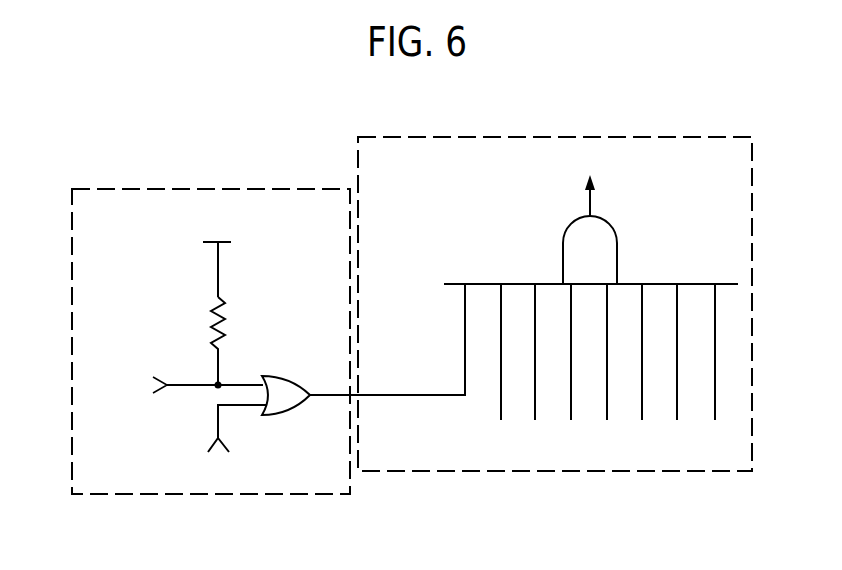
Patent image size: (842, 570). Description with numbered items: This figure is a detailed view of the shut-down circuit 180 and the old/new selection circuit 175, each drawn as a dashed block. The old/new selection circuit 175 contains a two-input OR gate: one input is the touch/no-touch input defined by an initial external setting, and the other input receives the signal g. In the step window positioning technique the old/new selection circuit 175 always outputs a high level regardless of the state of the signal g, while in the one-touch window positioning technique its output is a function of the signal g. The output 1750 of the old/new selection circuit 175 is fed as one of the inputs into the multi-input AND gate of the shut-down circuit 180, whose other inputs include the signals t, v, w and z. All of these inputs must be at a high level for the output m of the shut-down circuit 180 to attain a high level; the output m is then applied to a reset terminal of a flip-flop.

The old/new selection circuit 175 is at (158, 187).
The shut-down circuit 180 is at (560, 134).
The output of old/new selection circuit 1750 is at (465, 340).